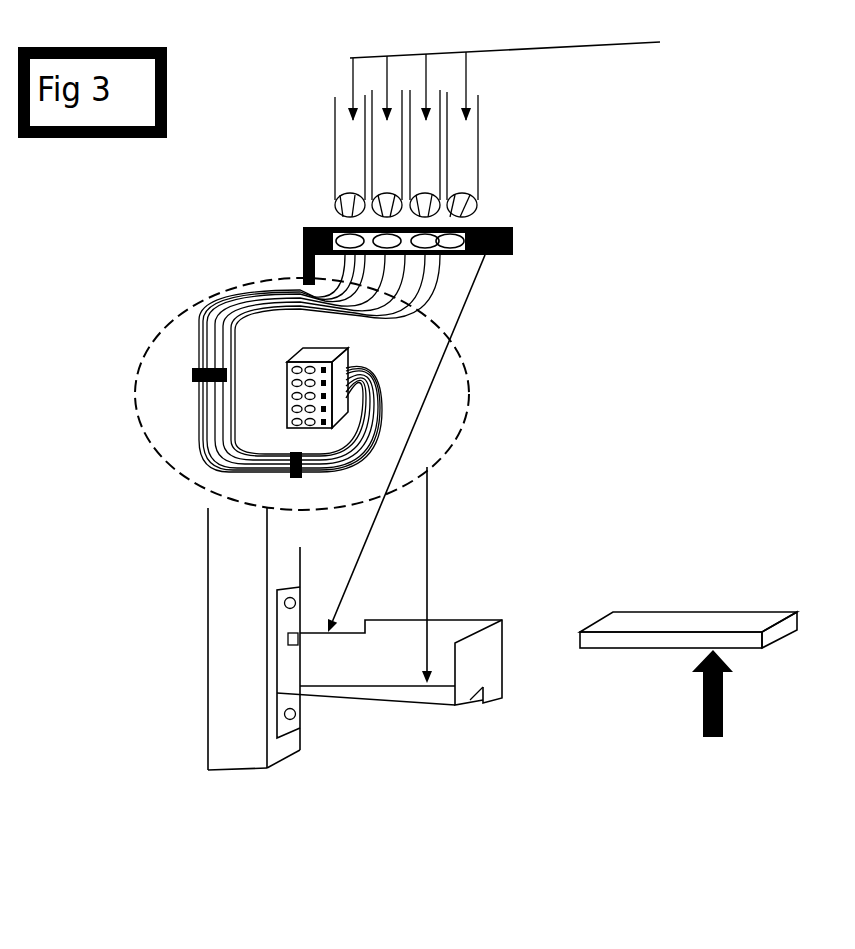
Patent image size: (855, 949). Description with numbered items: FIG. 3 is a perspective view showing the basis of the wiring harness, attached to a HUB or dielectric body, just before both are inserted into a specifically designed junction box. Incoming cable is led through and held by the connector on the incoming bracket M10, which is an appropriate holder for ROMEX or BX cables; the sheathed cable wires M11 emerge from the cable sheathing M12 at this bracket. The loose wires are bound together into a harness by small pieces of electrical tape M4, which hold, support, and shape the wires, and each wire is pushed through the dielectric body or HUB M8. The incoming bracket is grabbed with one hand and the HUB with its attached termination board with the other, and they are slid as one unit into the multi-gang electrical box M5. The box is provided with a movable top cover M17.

The sheathed cable wires M11 is at (544, 72).
The cable sheathing M12 is at (478, 112).
The incoming bracket M10 is at (524, 240).
The dielectric body or HUB M8 is at (337, 358).
The electrical tape M4 is at (386, 416).
The multi-gang electrical box M5 is at (383, 703).
The movable top cover M17 is at (690, 746).